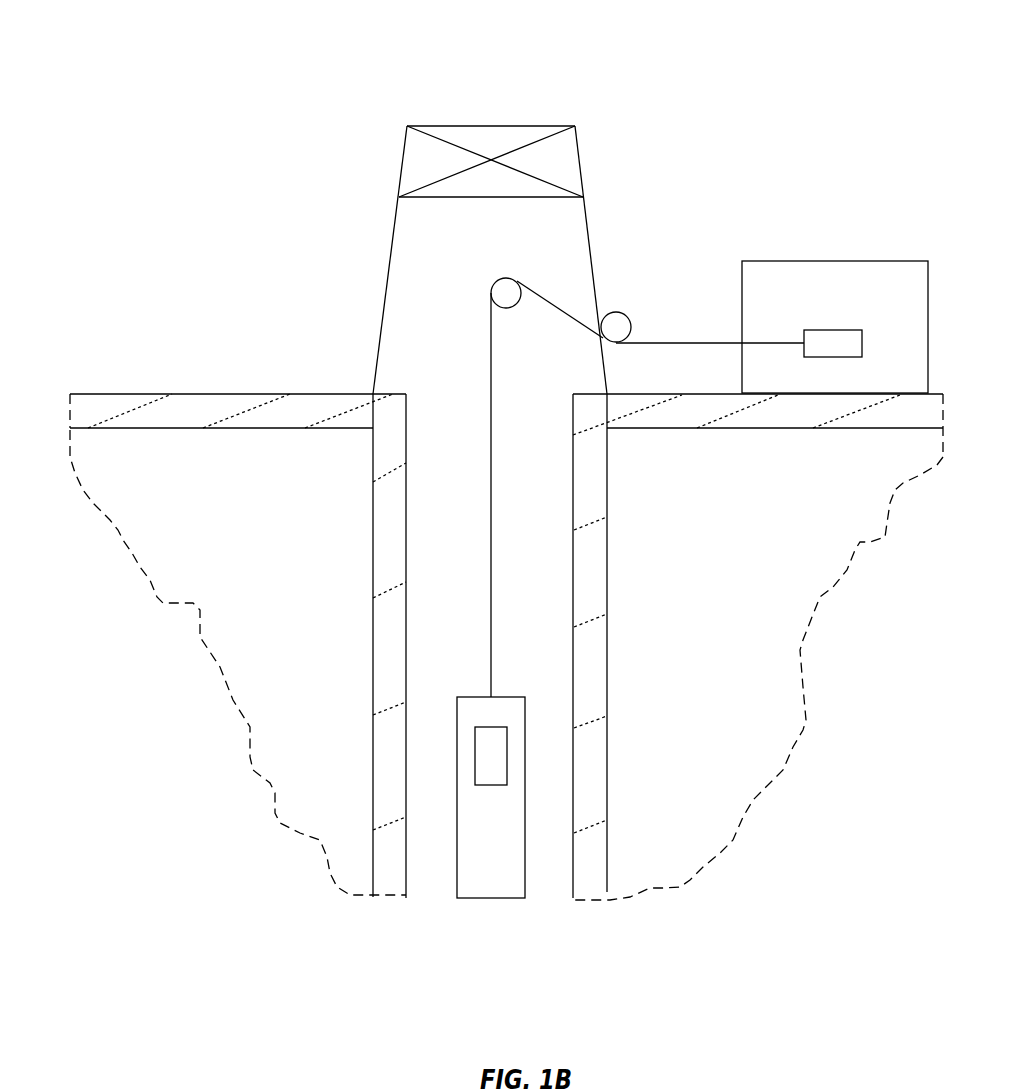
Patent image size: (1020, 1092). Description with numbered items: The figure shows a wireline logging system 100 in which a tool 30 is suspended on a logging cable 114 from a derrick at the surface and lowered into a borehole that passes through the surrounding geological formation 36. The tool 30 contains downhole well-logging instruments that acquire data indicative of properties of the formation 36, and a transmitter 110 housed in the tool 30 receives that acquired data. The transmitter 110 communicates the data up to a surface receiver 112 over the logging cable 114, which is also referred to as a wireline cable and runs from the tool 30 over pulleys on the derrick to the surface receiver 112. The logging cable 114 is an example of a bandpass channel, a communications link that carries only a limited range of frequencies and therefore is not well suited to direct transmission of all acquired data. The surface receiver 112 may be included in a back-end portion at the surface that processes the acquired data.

The well logging system 100 is at (802, 108).
The tool 30 is at (482, 898).
The formation 36 is at (723, 543).
The transmitter 110 is at (507, 757).
The surface receiver 112 is at (898, 315).
The logging cable 114 is at (647, 495).